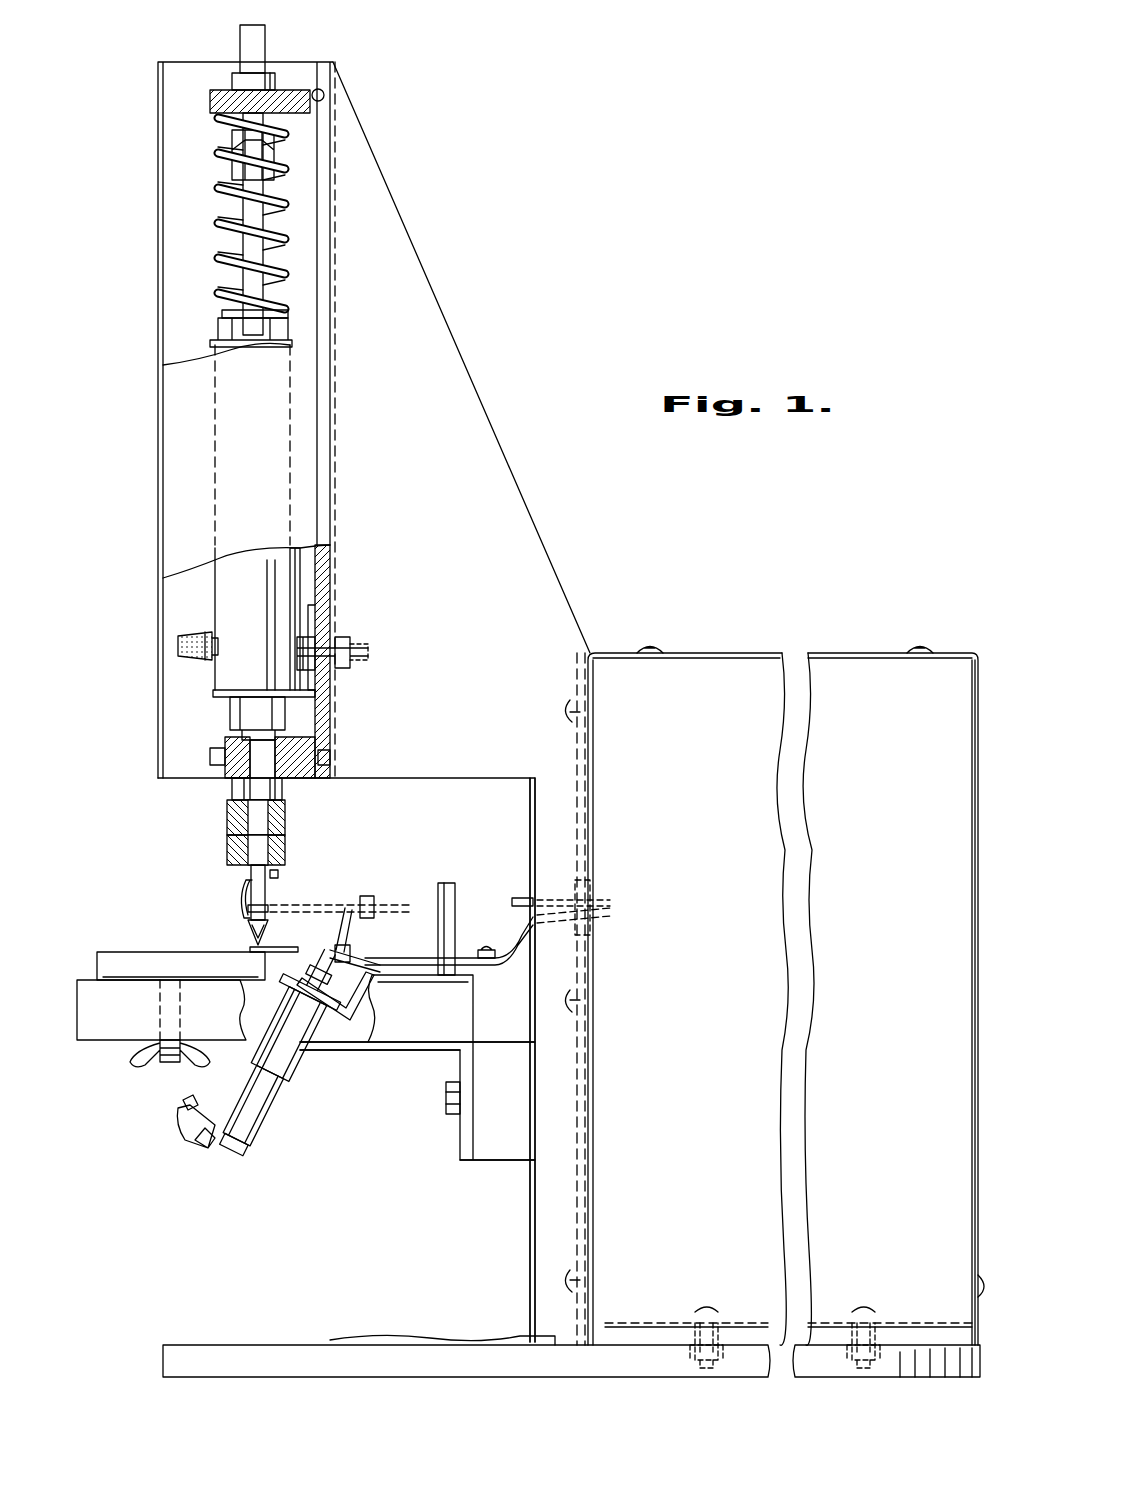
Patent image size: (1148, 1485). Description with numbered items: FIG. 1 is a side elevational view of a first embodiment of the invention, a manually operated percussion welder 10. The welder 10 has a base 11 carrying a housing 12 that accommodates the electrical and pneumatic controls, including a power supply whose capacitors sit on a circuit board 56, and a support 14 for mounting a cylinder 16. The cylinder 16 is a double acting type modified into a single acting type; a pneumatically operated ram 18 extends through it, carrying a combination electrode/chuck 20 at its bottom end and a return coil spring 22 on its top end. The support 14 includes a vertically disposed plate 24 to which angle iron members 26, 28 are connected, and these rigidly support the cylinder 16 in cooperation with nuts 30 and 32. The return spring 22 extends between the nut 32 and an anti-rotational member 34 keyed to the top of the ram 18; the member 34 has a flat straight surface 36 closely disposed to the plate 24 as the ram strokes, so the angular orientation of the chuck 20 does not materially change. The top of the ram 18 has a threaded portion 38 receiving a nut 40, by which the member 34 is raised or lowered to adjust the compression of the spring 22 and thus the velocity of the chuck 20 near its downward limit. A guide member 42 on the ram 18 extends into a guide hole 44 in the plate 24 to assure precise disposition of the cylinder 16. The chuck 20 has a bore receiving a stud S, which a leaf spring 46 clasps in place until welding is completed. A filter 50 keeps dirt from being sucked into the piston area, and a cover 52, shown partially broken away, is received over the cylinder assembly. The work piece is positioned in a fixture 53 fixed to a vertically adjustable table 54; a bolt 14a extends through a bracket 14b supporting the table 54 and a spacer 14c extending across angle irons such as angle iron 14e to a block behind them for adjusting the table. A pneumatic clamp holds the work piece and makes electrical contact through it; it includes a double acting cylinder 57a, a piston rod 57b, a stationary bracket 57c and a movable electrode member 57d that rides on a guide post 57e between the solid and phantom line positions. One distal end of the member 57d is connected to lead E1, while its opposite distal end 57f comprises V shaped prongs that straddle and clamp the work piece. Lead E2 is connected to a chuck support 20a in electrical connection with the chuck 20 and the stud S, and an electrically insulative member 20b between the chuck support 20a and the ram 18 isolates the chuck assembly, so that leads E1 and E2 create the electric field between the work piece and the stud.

The welder 10 is at (479, 312).
The base 11 is at (398, 1372).
The housing 12 is at (752, 653).
The support 14 is at (420, 454).
The bolt 14a is at (450, 1108).
The bracket 14b is at (430, 1050).
The spacer 14c is at (512, 1162).
The angle iron 14e is at (585, 1206).
The cylinder 16 is at (220, 595).
The ram 18 is at (243, 240).
The combination electrode/chuck 20 is at (268, 892).
The chuck support 20a is at (290, 840).
The electrically insulative member 20b is at (227, 820).
The return coil spring 22 is at (222, 130).
The plate 24 is at (325, 575).
The angle iron member 26 is at (213, 694).
The angle iron member 28 is at (218, 332).
The nut 30 is at (230, 712).
The nut 32 is at (222, 312).
The anti-rotational member 34 is at (210, 103).
The flat straight surface 36 is at (316, 92).
The threaded portion 38 is at (240, 43).
The nut 40 is at (232, 82).
The guide member 42 is at (300, 772).
The guide hole 44 is at (332, 757).
The leaf spring 46 is at (246, 900).
The filter 50 is at (178, 648).
The cover 52 is at (158, 325).
The fixture 53 is at (75, 962).
The table 54 is at (110, 1022).
The circuit board 56 is at (832, 1318).
The double acting cylinder 57a is at (283, 1110).
The piston rod 57b is at (330, 972).
The stationary bracket 57c is at (412, 975).
The movable electrode member 57d is at (470, 958).
The guide post 57e is at (448, 883).
The distal end 57f is at (258, 953).
The lead E1 is at (520, 950).
The lead E2 is at (512, 898).
The stud S is at (248, 932).